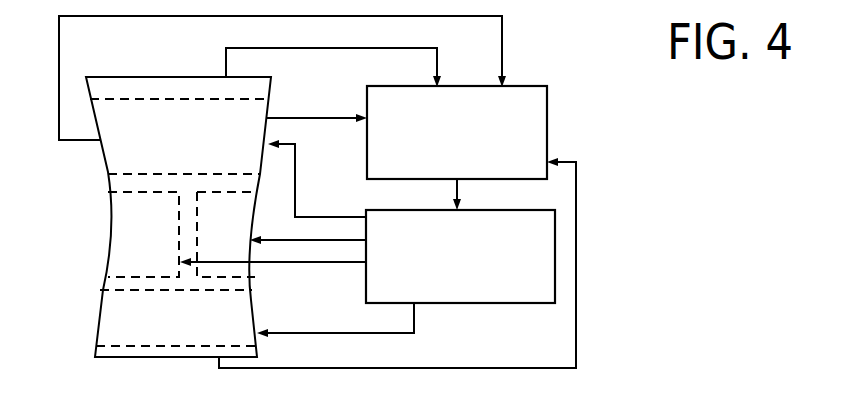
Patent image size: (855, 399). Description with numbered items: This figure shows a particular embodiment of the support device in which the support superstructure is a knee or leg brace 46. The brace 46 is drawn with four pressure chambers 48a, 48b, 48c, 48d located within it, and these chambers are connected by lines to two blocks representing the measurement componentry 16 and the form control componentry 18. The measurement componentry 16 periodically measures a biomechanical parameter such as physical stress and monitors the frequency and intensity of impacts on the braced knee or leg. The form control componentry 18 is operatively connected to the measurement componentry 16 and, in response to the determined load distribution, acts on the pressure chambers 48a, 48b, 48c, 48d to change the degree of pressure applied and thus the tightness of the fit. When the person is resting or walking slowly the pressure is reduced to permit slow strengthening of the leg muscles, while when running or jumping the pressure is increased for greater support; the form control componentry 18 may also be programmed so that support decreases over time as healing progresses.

The knee brace 46 is at (147, 76).
The pressure chamber 48a is at (115, 152).
The pressure chamber 48b is at (128, 250).
The pressure chamber 48c is at (245, 268).
The pressure chamber 48d is at (112, 327).
The measurement componentry 16 is at (548, 115).
The form control componentry 18 is at (457, 303).